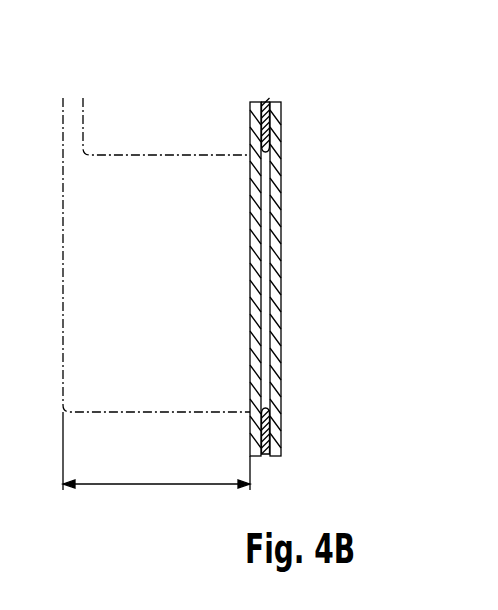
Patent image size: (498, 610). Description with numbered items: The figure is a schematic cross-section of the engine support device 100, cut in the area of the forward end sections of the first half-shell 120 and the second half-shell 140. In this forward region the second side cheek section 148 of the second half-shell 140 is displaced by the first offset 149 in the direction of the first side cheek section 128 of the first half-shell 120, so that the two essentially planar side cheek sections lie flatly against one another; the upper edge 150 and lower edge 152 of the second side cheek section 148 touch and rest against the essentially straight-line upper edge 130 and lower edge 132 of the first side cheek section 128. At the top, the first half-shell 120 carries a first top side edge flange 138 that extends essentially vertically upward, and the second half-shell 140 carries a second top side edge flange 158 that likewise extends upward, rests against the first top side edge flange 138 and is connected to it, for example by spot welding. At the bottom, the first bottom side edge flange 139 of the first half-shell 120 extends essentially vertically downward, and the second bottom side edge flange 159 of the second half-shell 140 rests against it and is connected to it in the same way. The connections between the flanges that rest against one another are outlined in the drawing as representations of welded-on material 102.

The engine support device 100 is at (208, 73).
The welded-on material 102 is at (267, 132).
The first half-shell 120 is at (283, 82).
The first side cheek section 128 is at (276, 288).
The upper edge 130 is at (277, 158).
The lower edge 132 is at (276, 413).
The first top side edge flange 138 is at (277, 122).
The first bottom side edge flange 139 is at (276, 438).
The second half-shell 140 is at (251, 82).
The second side cheek section 148 is at (256, 288).
The first offset 149 is at (150, 485).
The upper edge 150 is at (252, 156).
The lower edge 152 is at (254, 411).
The second top side edge flange 158 is at (256, 121).
The second bottom side edge flange 159 is at (259, 436).